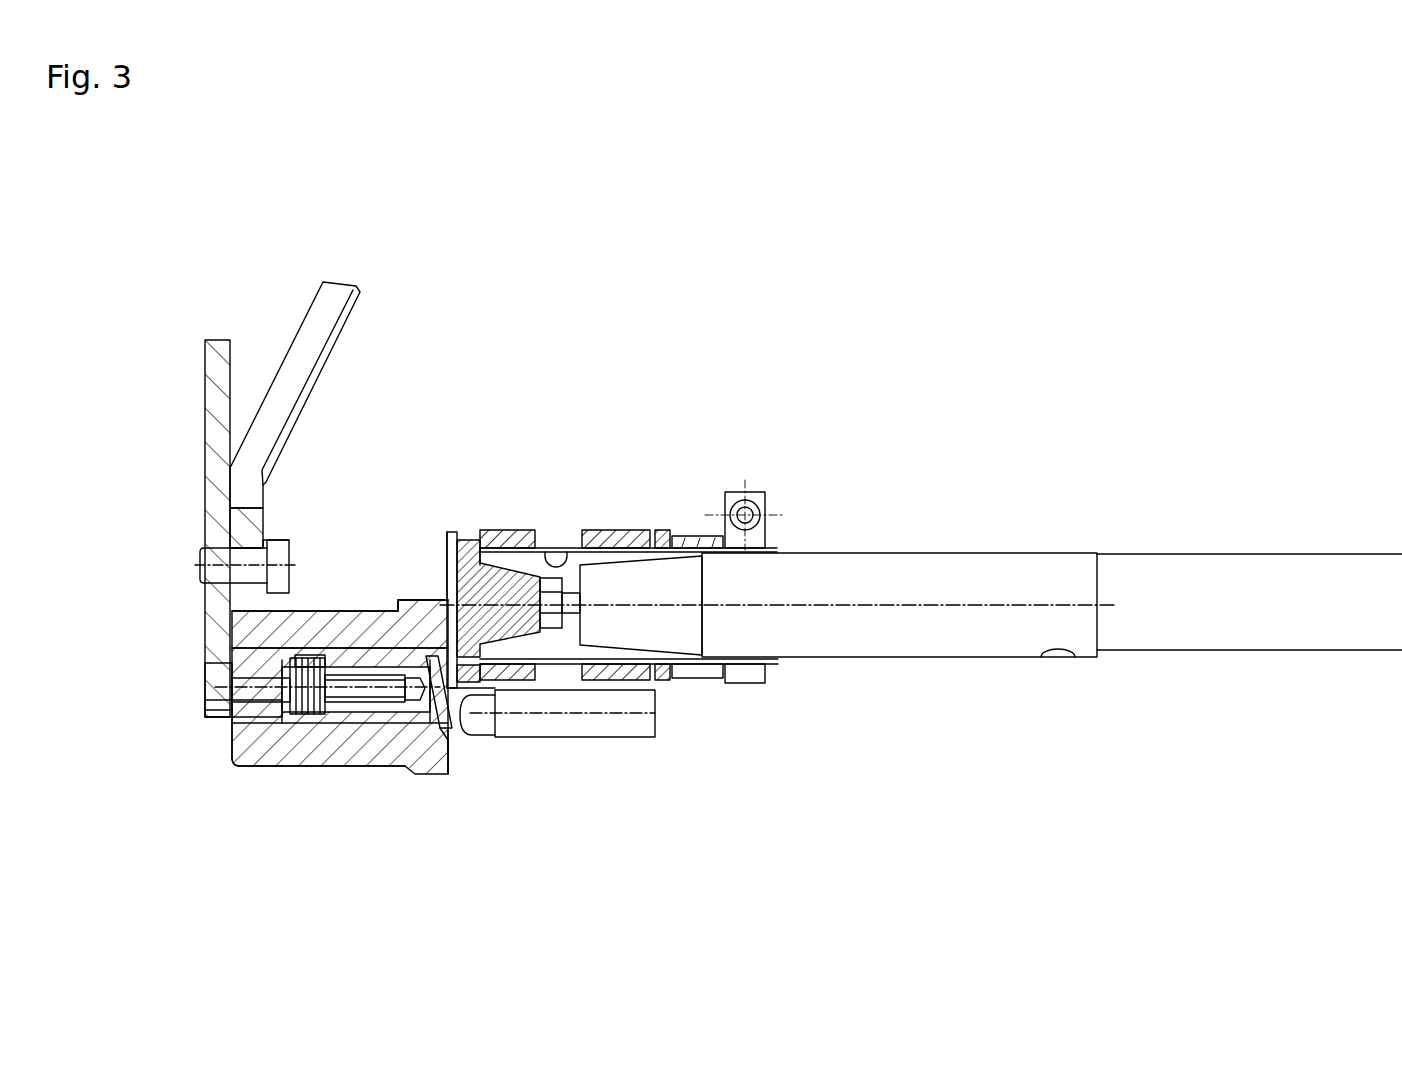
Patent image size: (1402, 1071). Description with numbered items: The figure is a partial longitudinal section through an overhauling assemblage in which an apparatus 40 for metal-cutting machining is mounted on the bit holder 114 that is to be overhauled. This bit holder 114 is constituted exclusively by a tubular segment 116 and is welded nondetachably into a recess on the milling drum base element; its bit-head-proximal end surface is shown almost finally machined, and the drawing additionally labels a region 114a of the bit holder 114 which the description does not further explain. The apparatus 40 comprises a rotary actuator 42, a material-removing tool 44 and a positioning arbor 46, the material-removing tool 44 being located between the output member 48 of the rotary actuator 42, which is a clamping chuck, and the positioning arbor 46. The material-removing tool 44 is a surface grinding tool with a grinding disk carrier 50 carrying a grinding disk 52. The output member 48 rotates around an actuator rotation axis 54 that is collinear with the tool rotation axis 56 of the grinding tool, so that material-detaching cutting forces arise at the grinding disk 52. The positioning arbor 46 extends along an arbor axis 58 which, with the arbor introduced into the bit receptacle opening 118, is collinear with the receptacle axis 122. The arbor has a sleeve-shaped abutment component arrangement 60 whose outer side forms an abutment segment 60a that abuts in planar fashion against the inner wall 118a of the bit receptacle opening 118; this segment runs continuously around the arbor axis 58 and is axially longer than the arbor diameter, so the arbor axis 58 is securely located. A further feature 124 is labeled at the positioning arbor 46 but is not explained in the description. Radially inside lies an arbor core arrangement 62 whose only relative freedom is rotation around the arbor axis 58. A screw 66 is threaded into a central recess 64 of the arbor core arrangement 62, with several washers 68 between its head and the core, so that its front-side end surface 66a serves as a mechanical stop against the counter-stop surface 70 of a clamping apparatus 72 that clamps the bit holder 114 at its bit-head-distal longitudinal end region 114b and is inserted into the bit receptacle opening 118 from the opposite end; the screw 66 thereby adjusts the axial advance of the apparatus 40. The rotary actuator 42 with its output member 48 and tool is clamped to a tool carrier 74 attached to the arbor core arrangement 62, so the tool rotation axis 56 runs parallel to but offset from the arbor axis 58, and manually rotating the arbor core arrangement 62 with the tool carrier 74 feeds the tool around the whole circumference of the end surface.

The apparatus 40 is at (616, 288).
The rotary actuator 42 is at (948, 568).
The material-removing tool 44 is at (458, 514).
The positioning arbor 46 is at (374, 740).
The output member 48 is at (600, 585).
The grinding disk carrier 50 is at (478, 560).
The grinding disk 52 is at (448, 560).
The actuator rotation axis 54 is at (714, 601).
The tool rotation axis 56 is at (872, 608).
The arbor axis 58 is at (164, 668).
The receptacle axis 122 is at (214, 678).
The abutment component arrangement 60 is at (355, 640).
The abutment segment 60a is at (340, 660).
The arbor core arrangement 62 is at (412, 770).
The central recess 64 is at (428, 602).
The screw 66 is at (276, 680).
The front-side end surface 66a is at (220, 702).
The washers 68 is at (305, 720).
The counter-stop surface 70 is at (300, 716).
The clamping apparatus 72 is at (262, 320).
The tool carrier 74 is at (672, 712).
The bit holder 114 is at (332, 780).
The housing end wall 114a is at (454, 812).
The bit-head-distal longitudinal end region 114b is at (228, 778).
The tubular segment 116 is at (262, 780).
The bit receptacle opening 118 is at (230, 736).
The inner wall 118a is at (232, 622).
The shoulder 124 is at (420, 600).